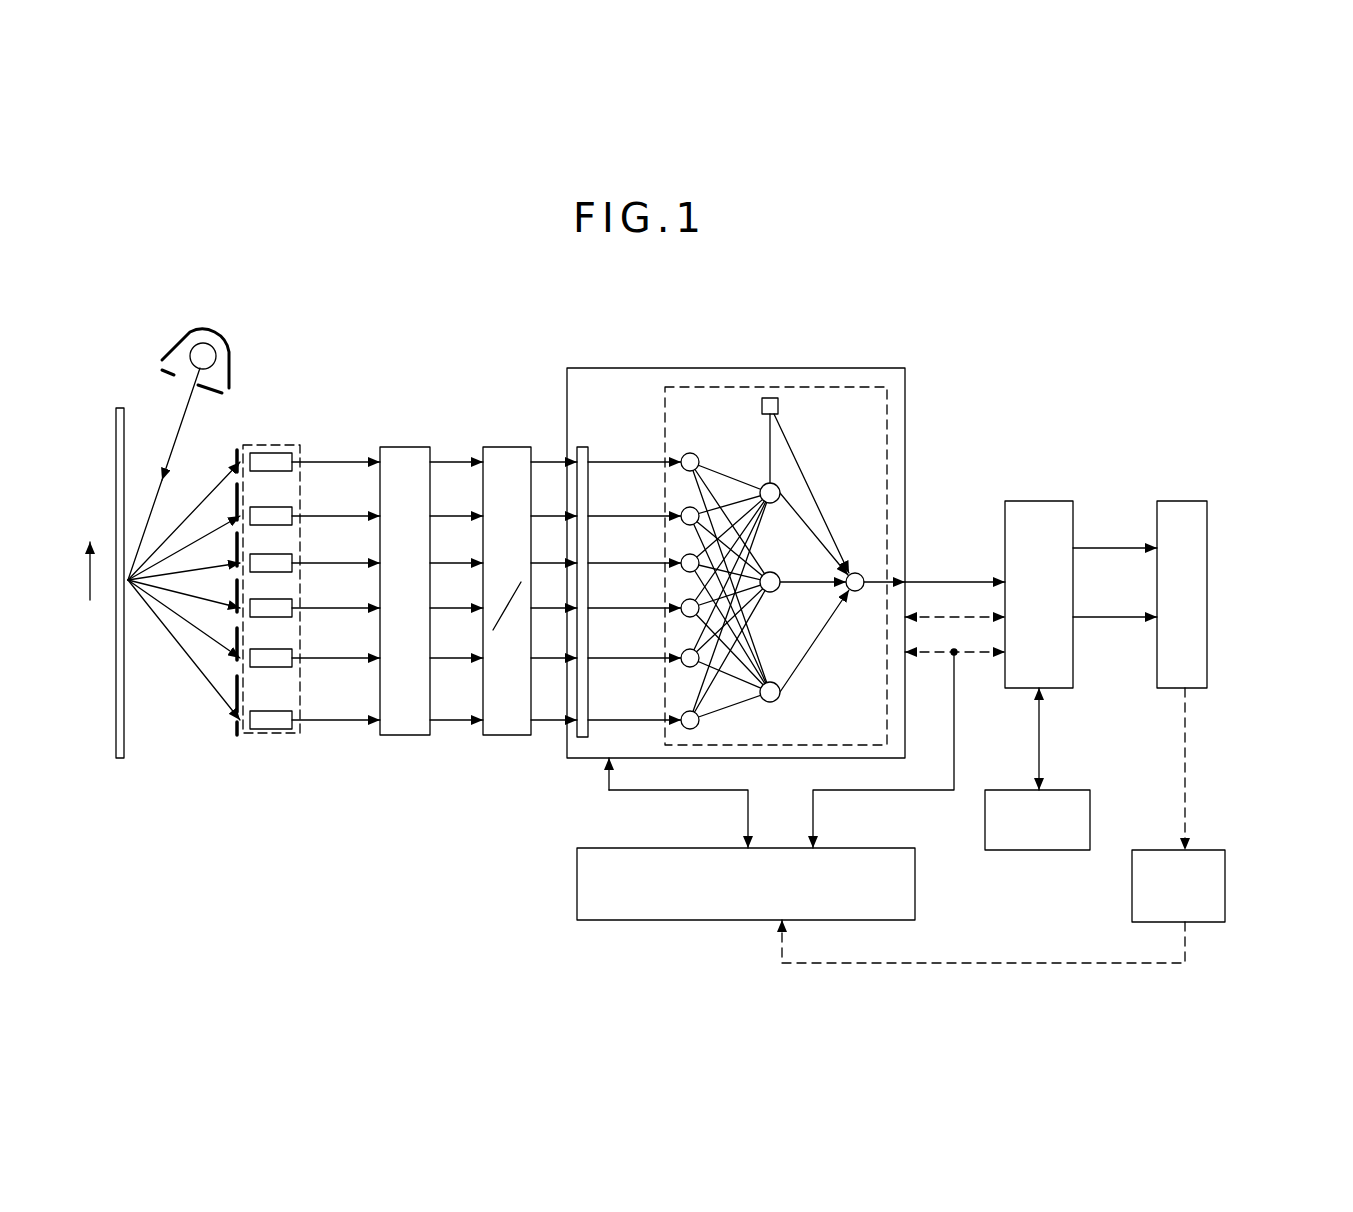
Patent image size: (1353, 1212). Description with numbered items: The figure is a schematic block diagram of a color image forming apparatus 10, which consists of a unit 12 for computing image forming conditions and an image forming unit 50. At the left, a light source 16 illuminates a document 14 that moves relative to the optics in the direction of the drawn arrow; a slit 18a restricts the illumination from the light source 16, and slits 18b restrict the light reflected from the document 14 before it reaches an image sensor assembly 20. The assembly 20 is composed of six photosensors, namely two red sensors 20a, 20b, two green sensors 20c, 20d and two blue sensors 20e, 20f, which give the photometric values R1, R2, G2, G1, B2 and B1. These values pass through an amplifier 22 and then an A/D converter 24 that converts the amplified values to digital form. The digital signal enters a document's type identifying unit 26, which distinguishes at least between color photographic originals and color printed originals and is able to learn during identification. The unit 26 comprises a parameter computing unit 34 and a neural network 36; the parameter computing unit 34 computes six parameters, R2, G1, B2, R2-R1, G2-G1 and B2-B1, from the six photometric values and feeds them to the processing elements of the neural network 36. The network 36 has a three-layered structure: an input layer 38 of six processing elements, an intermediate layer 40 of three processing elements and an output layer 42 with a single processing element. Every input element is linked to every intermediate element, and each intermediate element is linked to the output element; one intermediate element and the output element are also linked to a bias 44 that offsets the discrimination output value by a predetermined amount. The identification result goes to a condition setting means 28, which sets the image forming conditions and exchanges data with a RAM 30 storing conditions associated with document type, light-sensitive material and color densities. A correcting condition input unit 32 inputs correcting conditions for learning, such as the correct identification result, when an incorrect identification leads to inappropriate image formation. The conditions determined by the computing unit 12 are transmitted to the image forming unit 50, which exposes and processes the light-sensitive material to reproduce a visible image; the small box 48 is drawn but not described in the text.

The image forming apparatus 10 is at (1076, 358).
The unit for computing image forming conditions 12 is at (487, 387).
The document 14 is at (126, 730).
The light source 16 is at (209, 352).
The slit 18a is at (168, 374).
The slits 18b is at (233, 460).
The image sensor assembly 20 is at (275, 740).
The red sensor 20a is at (277, 455).
The red sensor 20b is at (273, 509).
The green sensor 20c is at (262, 556).
The green sensor 20d is at (262, 611).
The blue sensor 20e is at (273, 668).
The blue sensor 20f is at (293, 735).
The amplifier 22 is at (405, 737).
The A/D converter 24 is at (507, 737).
The document's type identifying unit 26 is at (770, 386).
The condition setting means 28 is at (1043, 500).
The RAM 30 is at (1043, 852).
The correcting condition input unit 32 is at (577, 886).
The parameter computing unit 34 is at (581, 446).
The neural network 36 is at (898, 426).
The input layer 38 is at (683, 412).
The intermediate layer 40 is at (745, 468).
The output layer 42 is at (864, 555).
The bias 44 is at (780, 406).
The learning control unit 48 is at (1225, 876).
The image forming unit 50 is at (1185, 500).